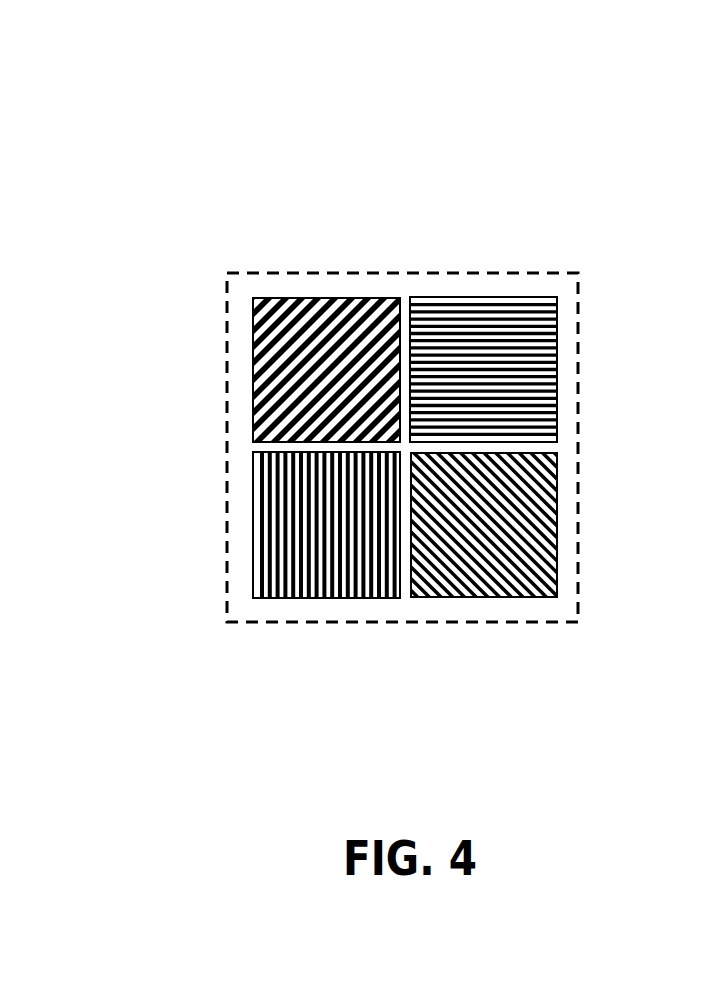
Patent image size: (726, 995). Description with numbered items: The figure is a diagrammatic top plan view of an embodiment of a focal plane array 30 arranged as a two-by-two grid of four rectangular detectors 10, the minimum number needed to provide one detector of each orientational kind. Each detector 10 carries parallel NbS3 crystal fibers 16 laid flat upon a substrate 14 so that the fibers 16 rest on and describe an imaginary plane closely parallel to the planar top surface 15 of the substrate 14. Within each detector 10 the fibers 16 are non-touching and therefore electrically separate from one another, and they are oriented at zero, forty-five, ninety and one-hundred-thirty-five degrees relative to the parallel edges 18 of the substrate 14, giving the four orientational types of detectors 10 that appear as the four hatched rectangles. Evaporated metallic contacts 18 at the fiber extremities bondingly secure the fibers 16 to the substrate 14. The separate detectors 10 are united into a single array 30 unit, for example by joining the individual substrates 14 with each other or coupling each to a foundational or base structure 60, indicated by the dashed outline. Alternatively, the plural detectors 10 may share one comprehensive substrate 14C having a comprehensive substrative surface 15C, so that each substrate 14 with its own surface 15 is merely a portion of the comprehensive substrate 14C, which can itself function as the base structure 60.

The detector 10 is at (403, 376).
The substrate 14 is at (486, 525).
The top surface of substrate 15 is at (493, 557).
The comprehensive substrate 14C is at (449, 233).
The comprehensive substrative surface 15C is at (449, 233).
The foundational or base structure 60 is at (455, 285).
The NbS3 crystal fibers 16 is at (320, 288).
The metallic contacts 18 is at (338, 363).
The focal plane array 30 is at (578, 249).